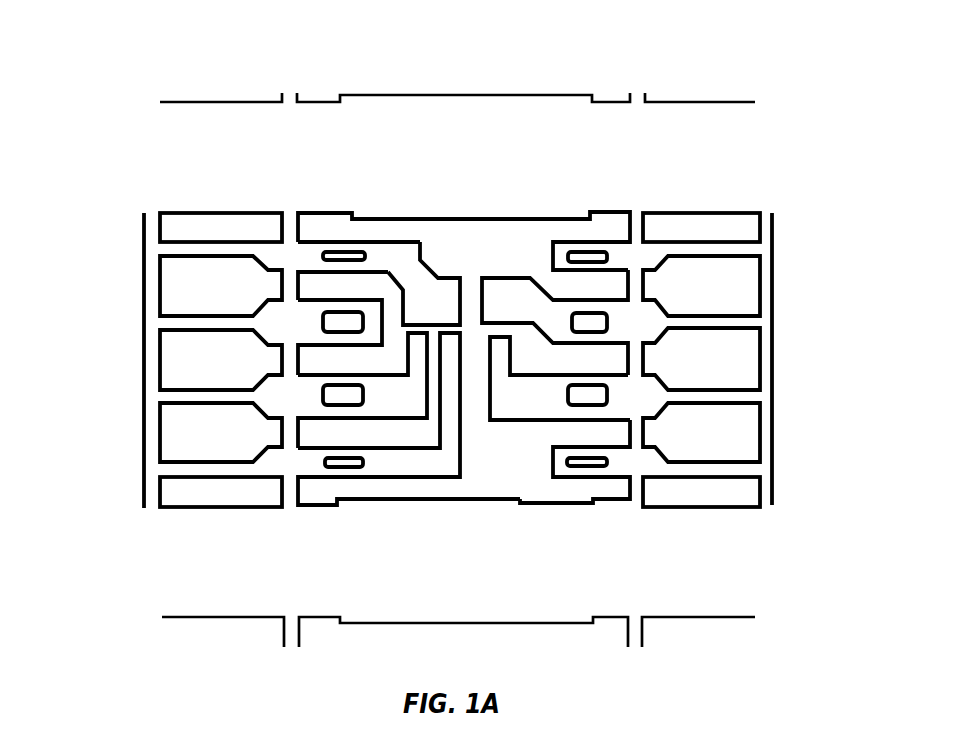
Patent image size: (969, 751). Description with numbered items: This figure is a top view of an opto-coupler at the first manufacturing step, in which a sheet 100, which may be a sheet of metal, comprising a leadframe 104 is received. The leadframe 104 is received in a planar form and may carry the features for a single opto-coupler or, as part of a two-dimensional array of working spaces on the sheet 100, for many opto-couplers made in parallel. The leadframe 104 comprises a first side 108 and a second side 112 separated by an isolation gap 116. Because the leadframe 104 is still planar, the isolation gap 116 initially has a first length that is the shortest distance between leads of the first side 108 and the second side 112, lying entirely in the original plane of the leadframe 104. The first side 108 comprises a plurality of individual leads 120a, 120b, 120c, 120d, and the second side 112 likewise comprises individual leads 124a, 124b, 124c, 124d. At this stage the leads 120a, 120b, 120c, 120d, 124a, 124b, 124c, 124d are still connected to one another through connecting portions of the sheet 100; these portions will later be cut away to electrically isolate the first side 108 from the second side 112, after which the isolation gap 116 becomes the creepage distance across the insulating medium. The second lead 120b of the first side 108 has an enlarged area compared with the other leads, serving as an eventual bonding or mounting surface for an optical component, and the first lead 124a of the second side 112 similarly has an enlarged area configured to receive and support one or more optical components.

The sheet 100 is at (443, 332).
The leadframe 104 is at (737, 140).
The first side 108 is at (523, 288).
The second side 112 is at (442, 288).
The isolation gap 116 is at (473, 280).
The first lead of first side 120a is at (622, 256).
The second lead of first side 120b is at (630, 322).
The third lead of first side 120c is at (630, 402).
The fourth lead of first side 120d is at (647, 460).
The first lead of second side 124a is at (387, 255).
The second lead of second side 124b is at (370, 318).
The third lead of second side 124c is at (370, 402).
The fourth lead of second side 124d is at (420, 467).